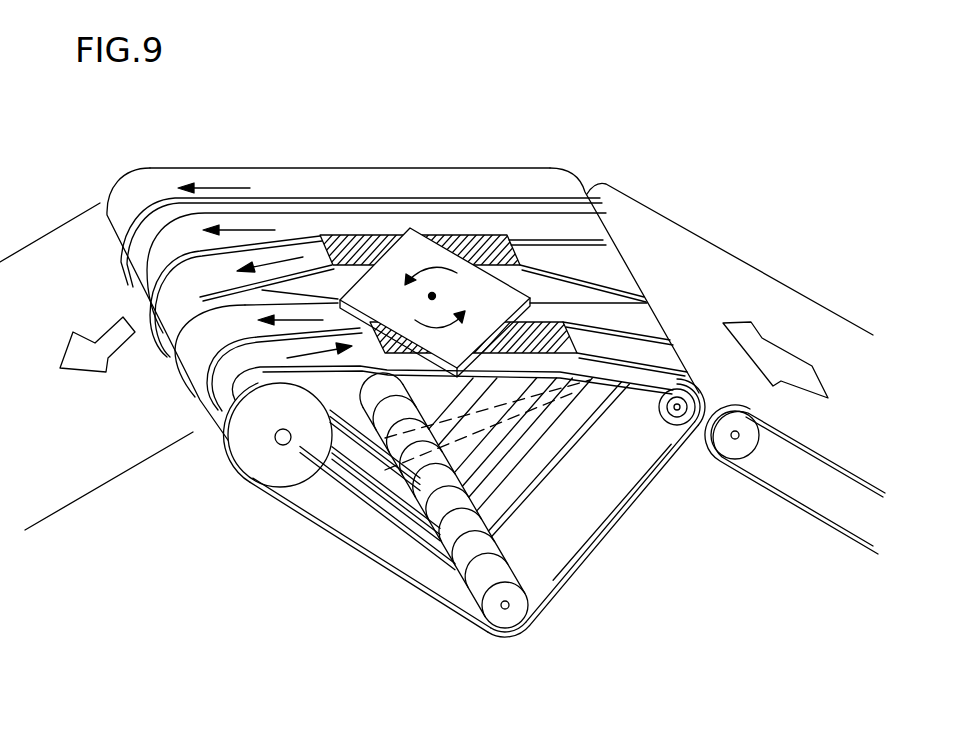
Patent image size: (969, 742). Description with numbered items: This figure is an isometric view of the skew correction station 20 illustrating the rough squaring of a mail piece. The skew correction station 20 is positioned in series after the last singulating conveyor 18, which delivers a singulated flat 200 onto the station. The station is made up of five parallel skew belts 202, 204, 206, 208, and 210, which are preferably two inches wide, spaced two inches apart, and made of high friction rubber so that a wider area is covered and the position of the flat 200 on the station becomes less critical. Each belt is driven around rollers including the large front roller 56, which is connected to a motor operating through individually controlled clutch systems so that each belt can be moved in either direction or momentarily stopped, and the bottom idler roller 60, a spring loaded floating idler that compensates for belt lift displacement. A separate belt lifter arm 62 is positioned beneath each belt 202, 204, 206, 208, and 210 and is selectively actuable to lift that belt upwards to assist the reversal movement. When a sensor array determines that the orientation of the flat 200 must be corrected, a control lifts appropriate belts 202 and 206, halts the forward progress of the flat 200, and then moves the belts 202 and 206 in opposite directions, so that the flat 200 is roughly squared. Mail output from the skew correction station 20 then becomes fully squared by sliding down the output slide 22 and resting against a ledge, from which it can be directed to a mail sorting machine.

The skew correction station 20 is at (414, 156).
The flat 200 is at (440, 262).
The skew belt 210 is at (137, 192).
The skew belt 208 is at (148, 268).
The skew belt 206 is at (160, 347).
The skew belt 204 is at (187, 387).
The skew belt 202 is at (213, 432).
The front roller 56 is at (257, 463).
The bottom idler roller 60 is at (520, 612).
The belt lifter arm 62 is at (618, 390).
The output slide 22 is at (92, 450).
The singulating conveyor 18 is at (832, 432).